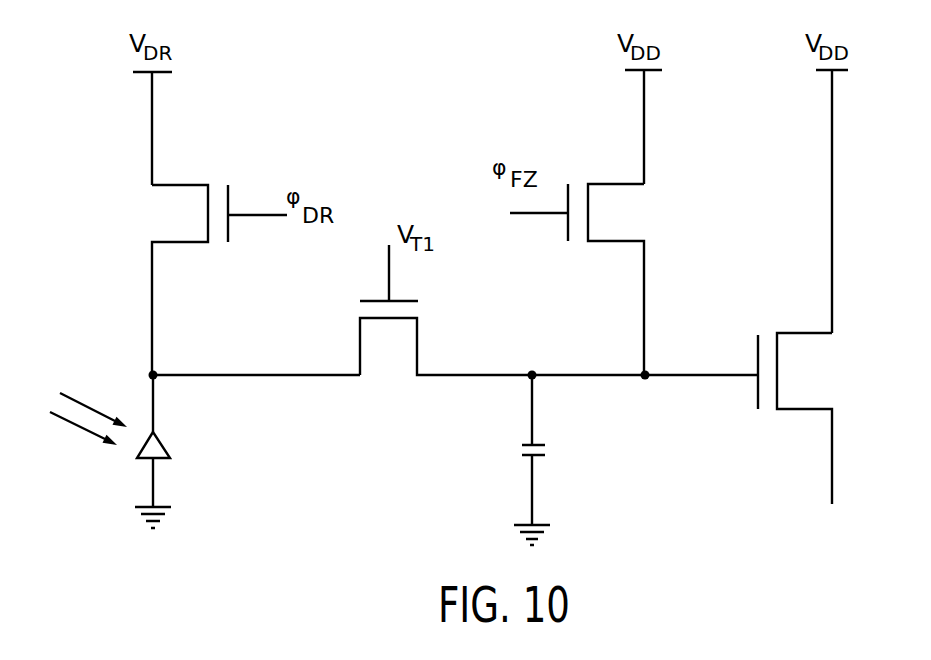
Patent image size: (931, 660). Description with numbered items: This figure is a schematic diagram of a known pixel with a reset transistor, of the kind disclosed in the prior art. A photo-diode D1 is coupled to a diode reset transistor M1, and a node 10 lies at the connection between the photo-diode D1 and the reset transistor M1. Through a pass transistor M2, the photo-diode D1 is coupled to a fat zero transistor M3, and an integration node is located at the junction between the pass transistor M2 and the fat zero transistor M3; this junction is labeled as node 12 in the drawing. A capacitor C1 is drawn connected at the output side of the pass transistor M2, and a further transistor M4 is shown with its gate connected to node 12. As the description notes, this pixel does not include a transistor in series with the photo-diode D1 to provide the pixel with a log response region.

The sense node (photodiode node) 10 is at (147, 375).
The storage node 12 is at (647, 372).
The diode reset transistor M1 is at (163, 242).
The pass transistor M2 is at (362, 362).
The fat zero transistor M3 is at (623, 241).
The source follower transistor M4 is at (819, 409).
The photo-diode D1 is at (167, 450).
The storage capacitor C1 is at (527, 443).